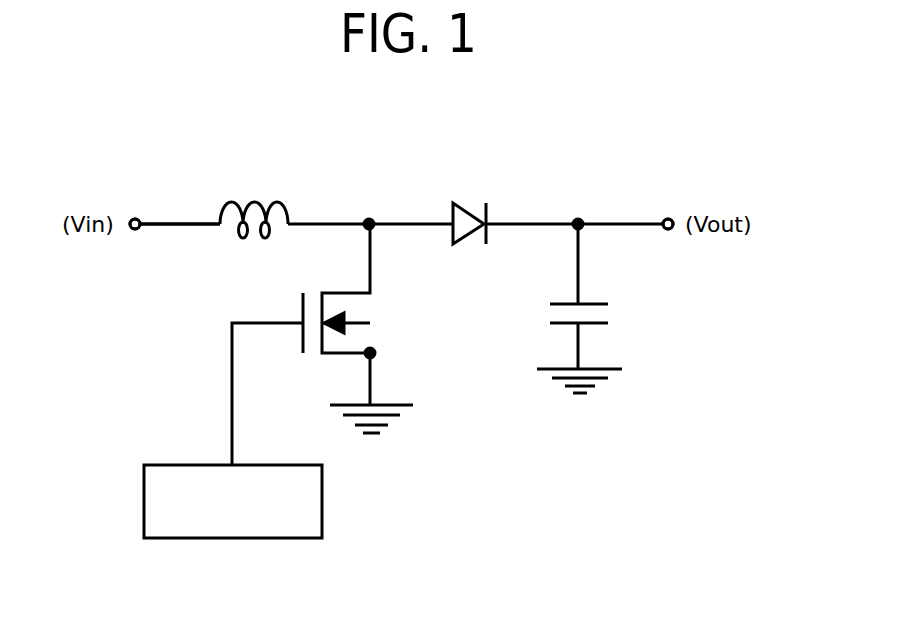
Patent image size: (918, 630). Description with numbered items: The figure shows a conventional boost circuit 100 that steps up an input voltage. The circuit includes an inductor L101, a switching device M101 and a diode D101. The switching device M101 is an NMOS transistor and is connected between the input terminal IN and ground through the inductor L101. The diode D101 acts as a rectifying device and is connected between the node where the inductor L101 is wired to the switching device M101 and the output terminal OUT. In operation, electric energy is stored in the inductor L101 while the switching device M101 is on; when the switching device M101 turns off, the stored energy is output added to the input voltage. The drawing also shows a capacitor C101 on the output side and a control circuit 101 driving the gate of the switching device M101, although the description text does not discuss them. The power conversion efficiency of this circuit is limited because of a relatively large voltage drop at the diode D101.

The conventional boost circuit 100 is at (617, 166).
The control circuit 101 is at (188, 463).
The inductor L101 is at (254, 202).
The diode D101 is at (471, 205).
The switching device M101 is at (322, 344).
The output capacitor C101 is at (592, 308).
The input terminal IN is at (135, 212).
The output terminal OUT is at (672, 212).